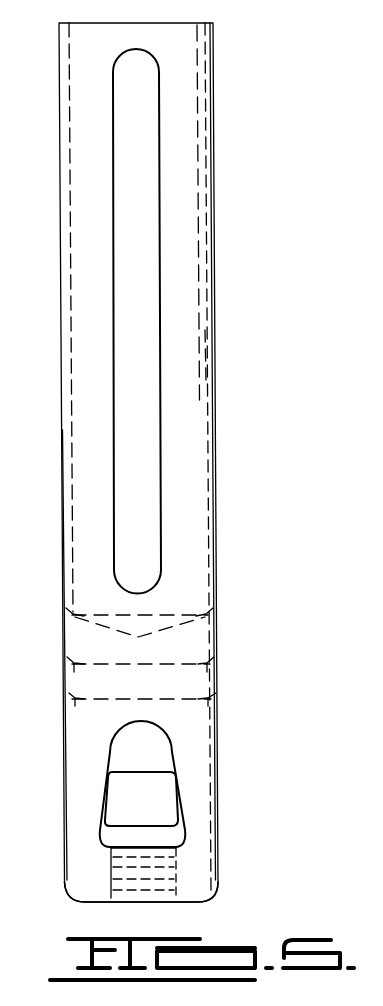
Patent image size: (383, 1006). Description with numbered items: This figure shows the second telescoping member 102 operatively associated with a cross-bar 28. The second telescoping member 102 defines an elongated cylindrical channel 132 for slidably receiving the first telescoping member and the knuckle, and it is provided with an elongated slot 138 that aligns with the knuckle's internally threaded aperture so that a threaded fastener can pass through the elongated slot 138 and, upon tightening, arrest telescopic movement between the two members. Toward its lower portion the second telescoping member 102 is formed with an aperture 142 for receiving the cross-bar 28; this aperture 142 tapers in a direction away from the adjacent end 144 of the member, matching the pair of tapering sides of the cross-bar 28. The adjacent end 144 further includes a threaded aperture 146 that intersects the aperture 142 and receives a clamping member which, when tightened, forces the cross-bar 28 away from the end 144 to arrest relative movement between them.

The second telescoping member 102 is at (250, 110).
The elongated cylindrical channel 132 is at (205, 363).
The elongated slot 138 is at (157, 472).
The cross-bar 28 is at (112, 783).
The aperture 142 is at (181, 802).
The adjacent end 144 is at (220, 882).
The threaded aperture 146 is at (118, 896).